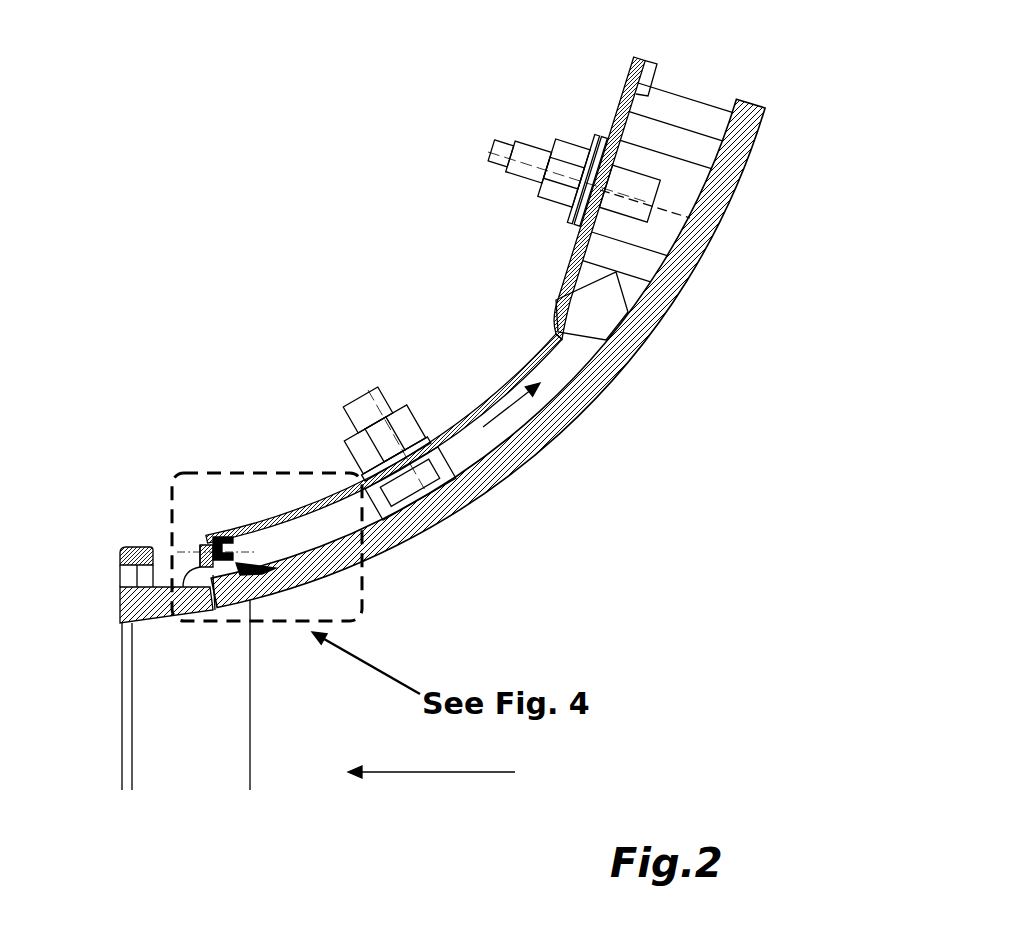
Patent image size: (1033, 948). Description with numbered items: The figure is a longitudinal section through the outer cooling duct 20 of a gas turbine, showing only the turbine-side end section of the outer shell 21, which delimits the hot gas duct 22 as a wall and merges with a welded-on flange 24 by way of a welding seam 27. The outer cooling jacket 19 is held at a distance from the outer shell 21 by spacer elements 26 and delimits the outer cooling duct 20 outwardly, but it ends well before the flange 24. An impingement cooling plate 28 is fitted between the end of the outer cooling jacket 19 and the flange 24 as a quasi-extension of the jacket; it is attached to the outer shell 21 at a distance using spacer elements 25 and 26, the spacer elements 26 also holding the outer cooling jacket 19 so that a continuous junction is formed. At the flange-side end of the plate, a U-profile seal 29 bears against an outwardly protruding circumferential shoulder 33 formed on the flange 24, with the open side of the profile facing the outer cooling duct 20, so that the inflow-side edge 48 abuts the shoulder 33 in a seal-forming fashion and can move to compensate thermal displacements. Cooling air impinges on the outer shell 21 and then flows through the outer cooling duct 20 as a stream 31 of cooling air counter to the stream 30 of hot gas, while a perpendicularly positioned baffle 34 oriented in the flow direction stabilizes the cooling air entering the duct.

The outer cooling jacket 19 is at (630, 78).
The outer cooling duct 20 is at (670, 125).
The outer shell 21 is at (365, 577).
The hot gas duct 22 is at (638, 570).
The flange 24 is at (133, 548).
The spacer element 25 is at (351, 364).
The spacer element 26 is at (474, 127).
The welding seam 27 is at (257, 591).
The impingement cooling plate 28 is at (318, 505).
The seal 29 is at (214, 607).
The stream of hot gas 30 is at (450, 772).
The stream of cooling air 31 is at (508, 405).
The shoulder 33 is at (200, 548).
The baffle 34 is at (593, 290).
The inflow-side edge 48 is at (210, 513).